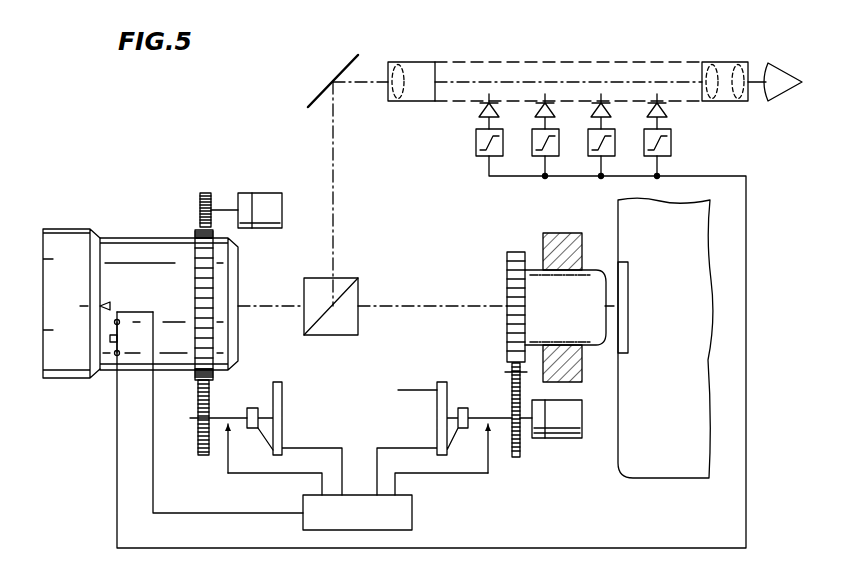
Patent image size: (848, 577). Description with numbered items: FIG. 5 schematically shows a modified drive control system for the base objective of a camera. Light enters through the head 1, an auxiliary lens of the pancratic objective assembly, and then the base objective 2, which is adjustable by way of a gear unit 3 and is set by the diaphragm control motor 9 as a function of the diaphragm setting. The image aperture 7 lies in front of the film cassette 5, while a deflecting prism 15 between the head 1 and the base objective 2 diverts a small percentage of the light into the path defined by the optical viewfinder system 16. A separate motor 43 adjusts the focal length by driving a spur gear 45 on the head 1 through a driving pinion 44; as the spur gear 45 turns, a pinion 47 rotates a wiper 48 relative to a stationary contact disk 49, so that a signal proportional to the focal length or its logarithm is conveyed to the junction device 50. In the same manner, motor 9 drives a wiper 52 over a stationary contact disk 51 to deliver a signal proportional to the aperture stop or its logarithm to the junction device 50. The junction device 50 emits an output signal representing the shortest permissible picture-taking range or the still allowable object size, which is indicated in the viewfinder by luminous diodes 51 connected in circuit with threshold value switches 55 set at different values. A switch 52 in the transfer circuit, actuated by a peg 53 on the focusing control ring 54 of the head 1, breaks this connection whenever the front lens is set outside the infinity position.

The head 1 is at (135, 247).
The base objective 2 is at (545, 282).
The gear unit 3 is at (504, 368).
The cassette 5 is at (673, 402).
The image aperture 7 is at (620, 342).
The diaphragm control motor 9 is at (560, 424).
The deflecting prism 15 is at (339, 283).
The optical viewfinder system 16 is at (421, 70).
The motor for focal length adjustment 43 is at (264, 193).
The driving pinion 44 is at (205, 193).
The spur gear 45 is at (203, 255).
The pinion 47 is at (198, 449).
The wiper 48 is at (266, 448).
The stationary contact disk 49 is at (282, 390).
The junction device 50 is at (366, 523).
The stationary contact disk / luminous diodes 51 is at (477, 108).
The wiper / switch 52 is at (124, 333).
The peg 53 is at (110, 338).
The focusing control ring 54 is at (66, 229).
The threshold value switches 55 is at (474, 142).